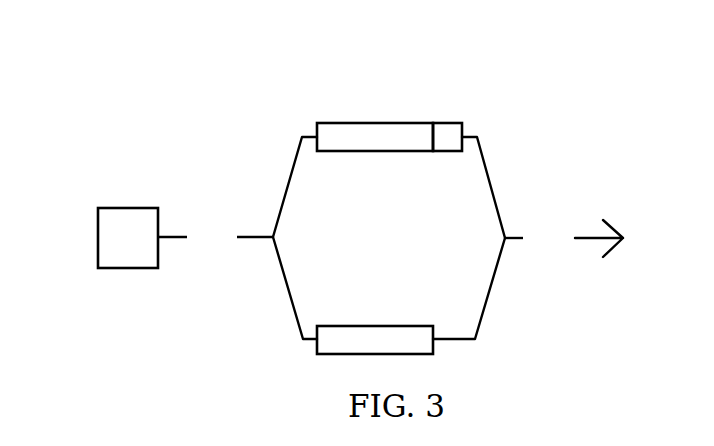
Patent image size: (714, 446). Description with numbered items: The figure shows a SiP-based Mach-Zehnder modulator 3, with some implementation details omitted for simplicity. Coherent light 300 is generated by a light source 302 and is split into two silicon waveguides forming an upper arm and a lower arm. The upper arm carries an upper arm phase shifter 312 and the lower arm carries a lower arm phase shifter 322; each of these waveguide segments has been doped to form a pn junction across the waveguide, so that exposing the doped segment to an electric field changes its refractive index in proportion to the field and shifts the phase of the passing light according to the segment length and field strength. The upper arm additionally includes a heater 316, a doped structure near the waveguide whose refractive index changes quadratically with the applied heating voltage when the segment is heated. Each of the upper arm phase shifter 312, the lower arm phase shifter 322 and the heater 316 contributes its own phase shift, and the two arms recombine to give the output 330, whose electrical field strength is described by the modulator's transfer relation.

The SiP-based Mach-Zehnder modulator 3 is at (213, 158).
The light source 302 is at (128, 238).
The coherent light 300 is at (215, 237).
The upper arm phase shifter 312 is at (375, 120).
The heater 316 is at (472, 120).
The lower arm phase shifter 322 is at (375, 322).
The output 330 is at (564, 238).